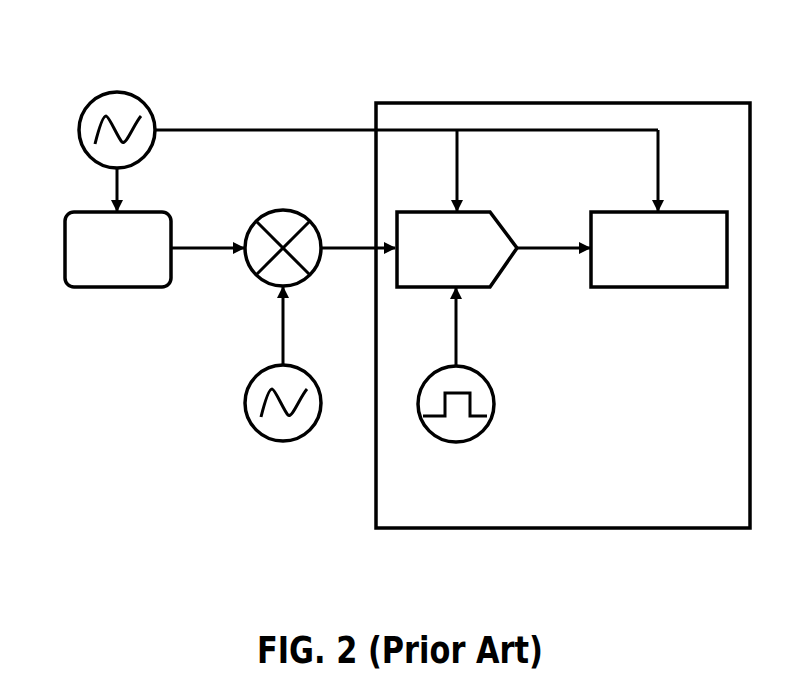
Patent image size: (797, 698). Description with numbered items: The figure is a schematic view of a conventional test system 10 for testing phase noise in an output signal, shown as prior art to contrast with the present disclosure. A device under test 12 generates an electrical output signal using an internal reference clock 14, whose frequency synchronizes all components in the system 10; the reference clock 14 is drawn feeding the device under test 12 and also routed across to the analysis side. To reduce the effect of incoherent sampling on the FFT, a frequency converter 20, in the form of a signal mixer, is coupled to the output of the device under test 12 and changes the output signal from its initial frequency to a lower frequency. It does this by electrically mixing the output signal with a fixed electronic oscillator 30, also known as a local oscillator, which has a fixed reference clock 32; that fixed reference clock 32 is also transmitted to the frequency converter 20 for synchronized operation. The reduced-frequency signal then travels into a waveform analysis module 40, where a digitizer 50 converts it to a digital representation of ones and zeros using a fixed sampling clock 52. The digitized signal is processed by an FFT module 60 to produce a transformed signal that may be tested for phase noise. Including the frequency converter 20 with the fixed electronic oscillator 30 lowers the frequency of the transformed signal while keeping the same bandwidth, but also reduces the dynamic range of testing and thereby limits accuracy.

The conventional test system 10 is at (206, 88).
The device under test (DUT) 12 is at (106, 277).
The internal reference clock 14 is at (97, 130).
The frequency converter 20 is at (283, 236).
The fixed electronic oscillator (EO) 30 is at (248, 384).
The fixed reference clock 32 is at (262, 403).
The waveform analysis module 40 is at (696, 510).
The digitizer 50 is at (476, 227).
The fixed sampling clock 52 is at (472, 403).
The FFT module 60 is at (675, 230).